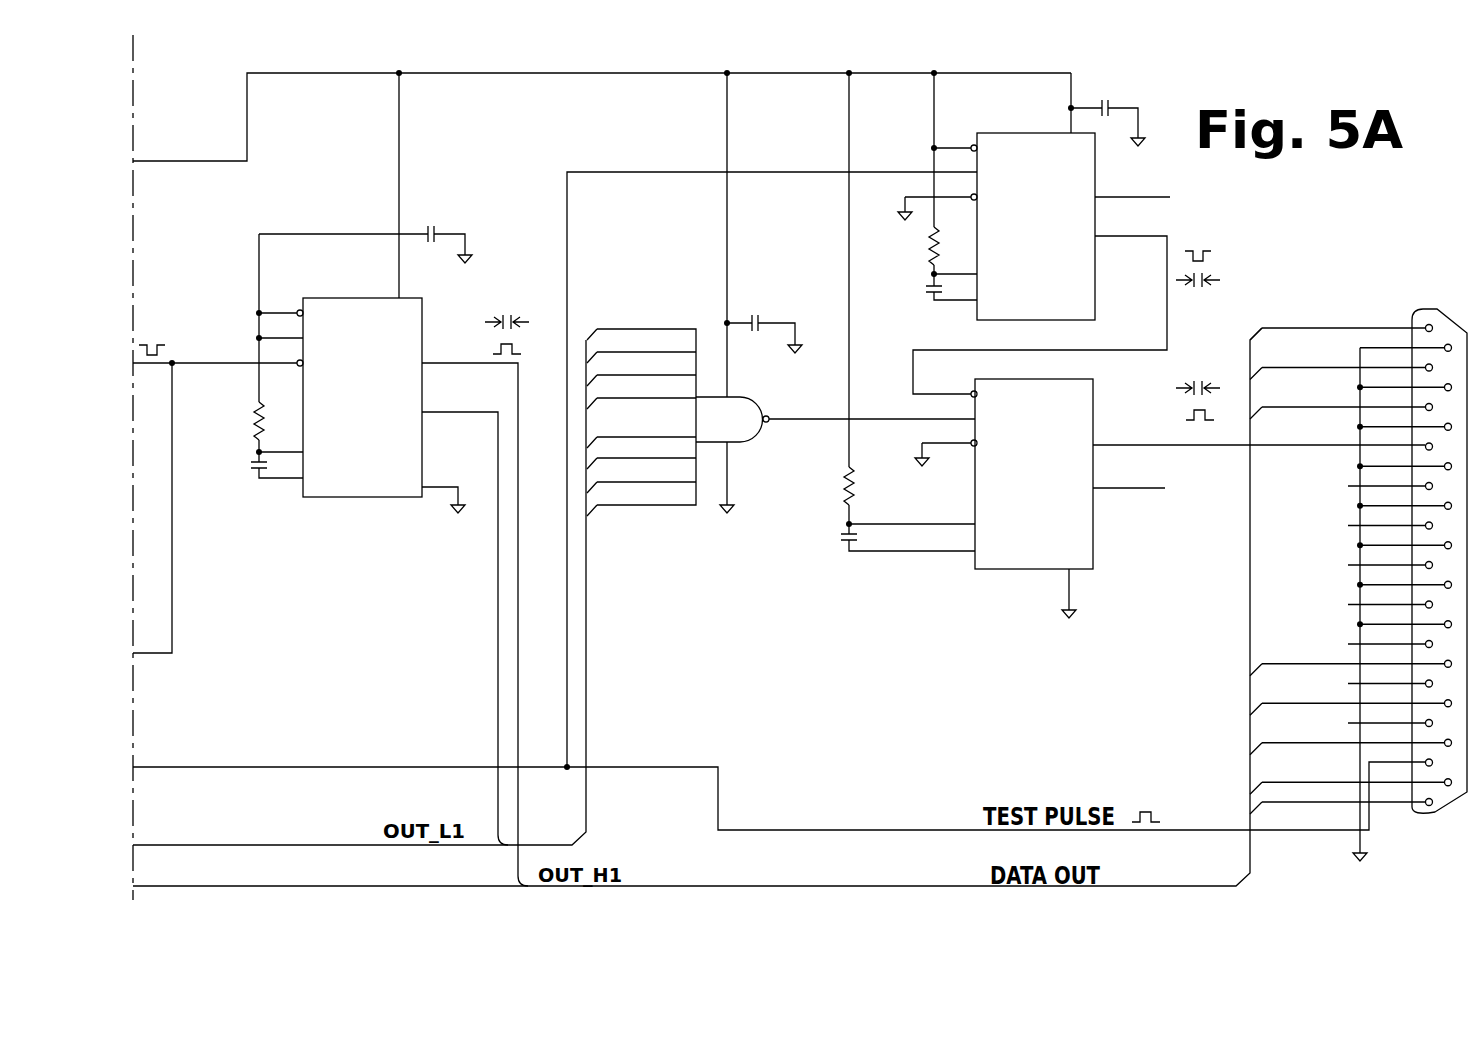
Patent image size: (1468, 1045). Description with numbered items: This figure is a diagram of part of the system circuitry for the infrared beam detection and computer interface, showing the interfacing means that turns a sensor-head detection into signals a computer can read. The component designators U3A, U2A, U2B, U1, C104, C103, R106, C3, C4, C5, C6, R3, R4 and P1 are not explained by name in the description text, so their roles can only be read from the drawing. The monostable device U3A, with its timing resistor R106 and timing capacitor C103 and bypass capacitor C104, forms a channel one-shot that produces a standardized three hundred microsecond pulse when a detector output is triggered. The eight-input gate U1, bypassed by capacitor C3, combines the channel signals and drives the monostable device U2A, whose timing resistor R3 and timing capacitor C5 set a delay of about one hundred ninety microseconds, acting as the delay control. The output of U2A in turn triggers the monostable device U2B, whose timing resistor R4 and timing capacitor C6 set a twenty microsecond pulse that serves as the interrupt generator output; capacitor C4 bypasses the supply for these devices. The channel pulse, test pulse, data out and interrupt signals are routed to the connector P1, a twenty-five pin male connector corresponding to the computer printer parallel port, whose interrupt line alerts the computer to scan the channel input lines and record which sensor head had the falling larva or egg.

The monostable multivibrator 74LS221 (first half) U3A is at (395, 479).
The monostable multivibrator 74LS221 (first half of U2) U2A is at (1096, 235).
The monostable multivibrator 74LS221 (second half of U2) U2B is at (1170, 488).
The 8-input NAND gate 74LS30 U1 is at (781, 294).
The bypass capacitor .1uF C104 is at (365, 216).
The timing capacitor 1.5uF C103 is at (244, 480).
The timing resistor 274K R106 is at (243, 428).
The bypass capacitor .1uF C3 is at (763, 304).
The bypass capacitor .1uF C4 is at (1106, 94).
The timing capacitor 1.5uF C5 is at (915, 309).
The timing capacitor 1.5uF C6 is at (870, 553).
The timing resistor 175K R3 is at (926, 256).
The timing resistor 10.2K R4 is at (872, 303).
The DB25 male connector P1 is at (1358, 592).